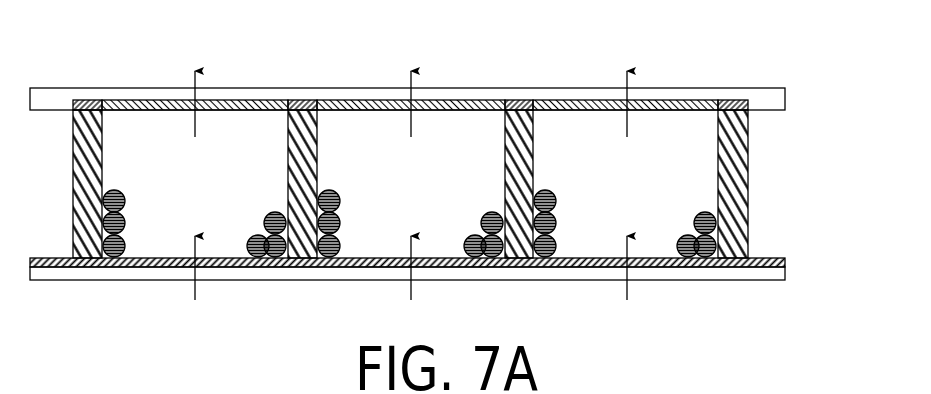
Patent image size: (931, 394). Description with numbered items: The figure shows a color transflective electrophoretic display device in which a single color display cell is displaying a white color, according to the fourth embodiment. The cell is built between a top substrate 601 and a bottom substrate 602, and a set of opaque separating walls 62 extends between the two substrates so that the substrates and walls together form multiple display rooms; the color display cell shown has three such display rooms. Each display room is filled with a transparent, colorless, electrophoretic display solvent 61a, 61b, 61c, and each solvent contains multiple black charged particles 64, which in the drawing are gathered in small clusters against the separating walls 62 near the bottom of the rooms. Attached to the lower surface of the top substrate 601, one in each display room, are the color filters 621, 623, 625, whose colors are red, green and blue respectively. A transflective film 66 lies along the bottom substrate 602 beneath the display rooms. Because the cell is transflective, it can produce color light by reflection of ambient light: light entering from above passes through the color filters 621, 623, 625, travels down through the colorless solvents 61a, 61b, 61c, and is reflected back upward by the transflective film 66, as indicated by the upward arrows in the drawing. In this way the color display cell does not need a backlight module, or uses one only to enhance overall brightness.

The top substrate 601 is at (784, 97).
The bottom substrate 602 is at (763, 273).
The separating walls 62 is at (743, 198).
The transflective film 66 is at (785, 260).
The black charged particles 64 is at (702, 257).
The transparent, colorless, electrophoretic display solvent 61a is at (147, 135).
The transparent, colorless, electrophoretic display solvent 61b is at (365, 135).
The transparent, colorless, electrophoretic display solvent 61c is at (580, 135).
The color filter 621 is at (244, 105).
The color filter 623 is at (462, 105).
The color filter 625 is at (670, 105).